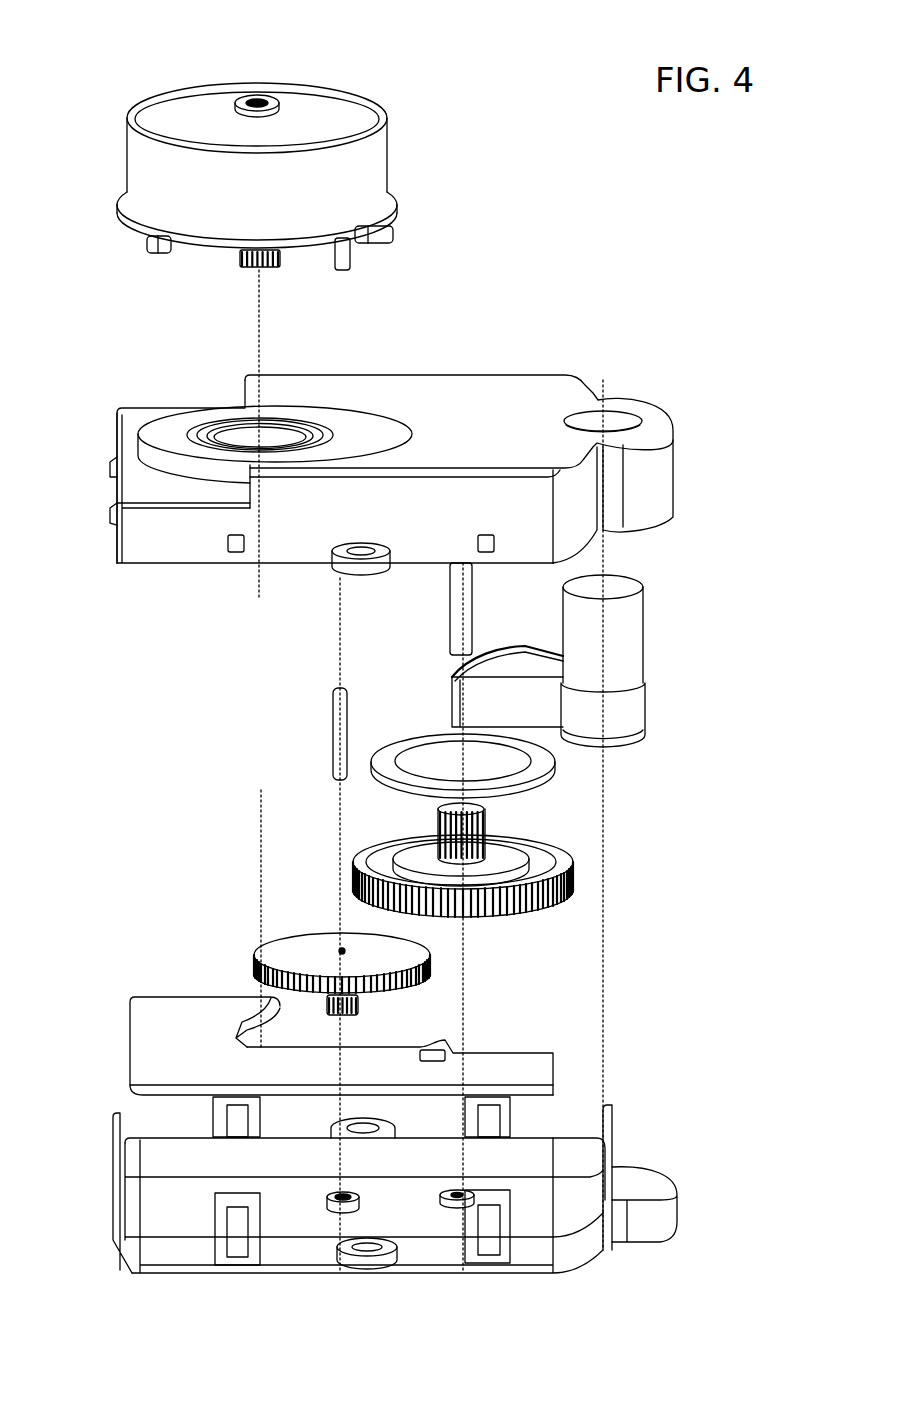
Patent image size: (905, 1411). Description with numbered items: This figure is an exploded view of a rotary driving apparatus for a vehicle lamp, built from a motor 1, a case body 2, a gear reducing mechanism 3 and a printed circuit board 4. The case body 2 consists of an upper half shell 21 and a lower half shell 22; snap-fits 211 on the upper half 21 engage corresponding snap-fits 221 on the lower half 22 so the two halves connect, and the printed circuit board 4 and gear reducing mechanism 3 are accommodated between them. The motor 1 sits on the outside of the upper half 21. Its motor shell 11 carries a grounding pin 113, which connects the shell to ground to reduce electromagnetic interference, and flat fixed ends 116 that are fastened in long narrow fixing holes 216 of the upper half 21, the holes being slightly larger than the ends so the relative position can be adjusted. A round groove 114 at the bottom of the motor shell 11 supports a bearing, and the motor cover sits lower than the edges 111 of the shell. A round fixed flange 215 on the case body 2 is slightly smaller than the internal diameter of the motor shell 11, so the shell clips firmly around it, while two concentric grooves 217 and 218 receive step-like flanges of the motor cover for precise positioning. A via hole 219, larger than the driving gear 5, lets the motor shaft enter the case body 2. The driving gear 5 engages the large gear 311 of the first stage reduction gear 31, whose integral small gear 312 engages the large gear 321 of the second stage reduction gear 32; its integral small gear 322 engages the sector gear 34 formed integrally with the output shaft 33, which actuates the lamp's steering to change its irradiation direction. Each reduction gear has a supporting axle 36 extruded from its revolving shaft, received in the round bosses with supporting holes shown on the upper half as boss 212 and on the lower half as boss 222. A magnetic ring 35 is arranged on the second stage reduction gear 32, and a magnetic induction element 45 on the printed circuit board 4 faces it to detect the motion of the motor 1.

The motor 1 is at (413, 63).
The motor shell 11 is at (378, 153).
The edges of the motor shell 111 is at (118, 212).
The grounding pin 113 is at (352, 260).
The round groove 114 is at (240, 102).
The flat fixed ends 116 is at (147, 243).
The driving gear 5 is at (272, 262).
The case body 2 is at (718, 387).
The upper half shell 21 is at (483, 380).
The snap-fits 211 is at (236, 553).
The bearing bush 212 is at (332, 568).
The fixed flange 215 is at (120, 442).
The fixing holes 216 is at (118, 477).
The groove 217 is at (193, 430).
The groove 218 is at (213, 427).
The via hole 219 is at (250, 430).
The lower half shell 22 is at (572, 1254).
The snap-fits 221 is at (217, 1258).
The bearing boss 222 is at (352, 1262).
The gear reducing mechanism 3 is at (645, 965).
The first stage reduction gear 31 is at (205, 925).
The large gear 311 is at (316, 935).
The small gear 312 is at (360, 1008).
The second stage reduction gear 32 is at (328, 828).
The large gear 321 is at (545, 916).
The small gear 322 is at (486, 830).
The output shaft 33 is at (640, 620).
The sector gear 34 is at (452, 698).
The magnetic ring 35 is at (556, 773).
The supporting axle 36 is at (452, 610).
The printed circuit board 4 is at (143, 1035).
The magnetic induction element 45 is at (462, 1048).